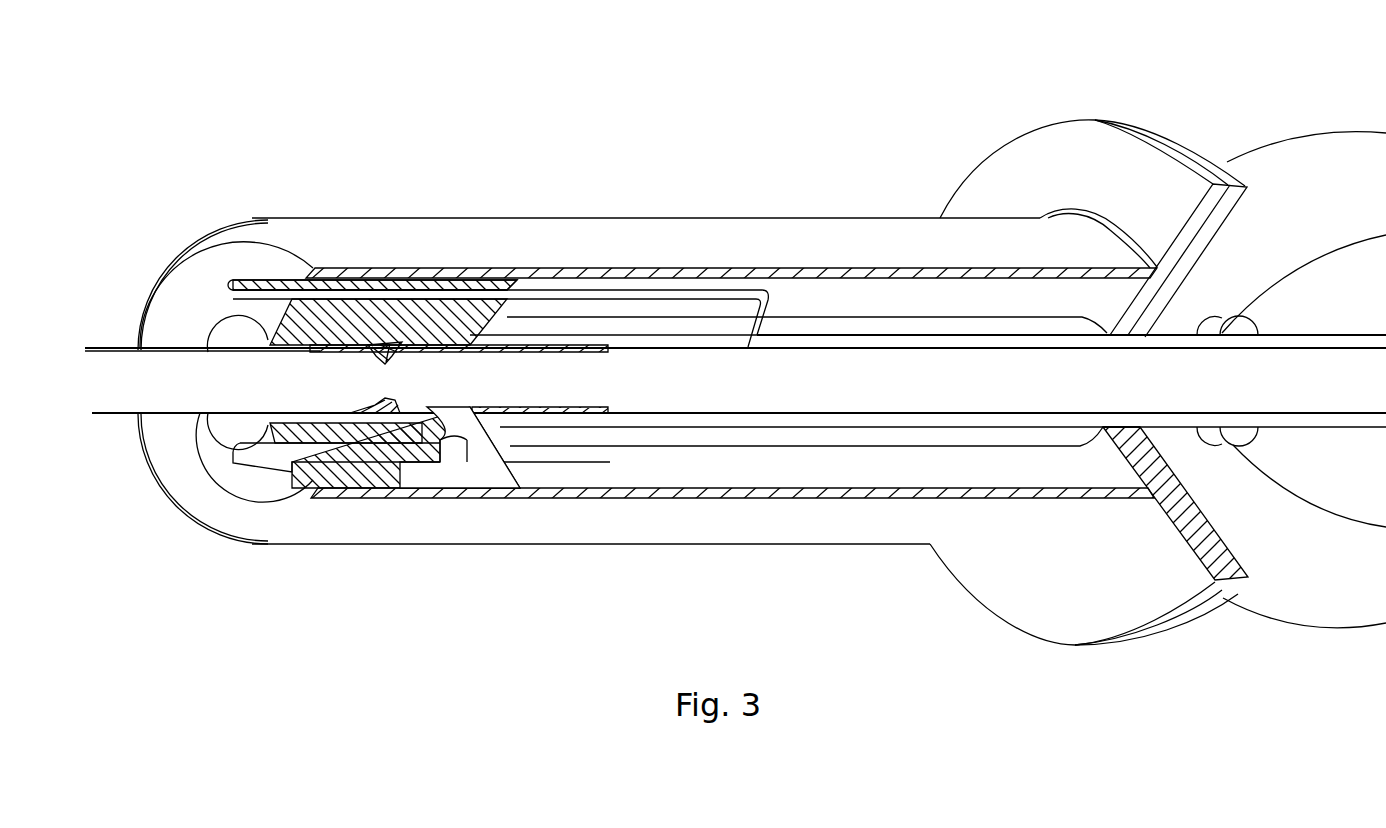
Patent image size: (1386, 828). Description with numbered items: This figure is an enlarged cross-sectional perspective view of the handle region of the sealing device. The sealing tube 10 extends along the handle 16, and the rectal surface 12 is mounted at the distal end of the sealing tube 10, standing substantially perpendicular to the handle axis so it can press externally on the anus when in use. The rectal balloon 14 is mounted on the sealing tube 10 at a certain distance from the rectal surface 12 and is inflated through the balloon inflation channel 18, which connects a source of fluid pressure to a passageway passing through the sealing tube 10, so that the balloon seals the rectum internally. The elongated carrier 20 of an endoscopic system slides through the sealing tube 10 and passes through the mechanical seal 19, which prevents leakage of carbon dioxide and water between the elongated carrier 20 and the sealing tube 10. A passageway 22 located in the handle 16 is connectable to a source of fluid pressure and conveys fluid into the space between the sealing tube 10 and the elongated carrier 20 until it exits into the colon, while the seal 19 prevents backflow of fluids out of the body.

The sealing tube 10 is at (1315, 325).
The rectal surface 12 is at (1120, 530).
The rectal balloon 14 is at (1310, 545).
The handle 16 is at (780, 240).
The balloon inflation channel 18 is at (598, 300).
The mechanical seal 19 is at (386, 340).
The elongated carrier 20 is at (114, 372).
The passageway 22 is at (316, 452).